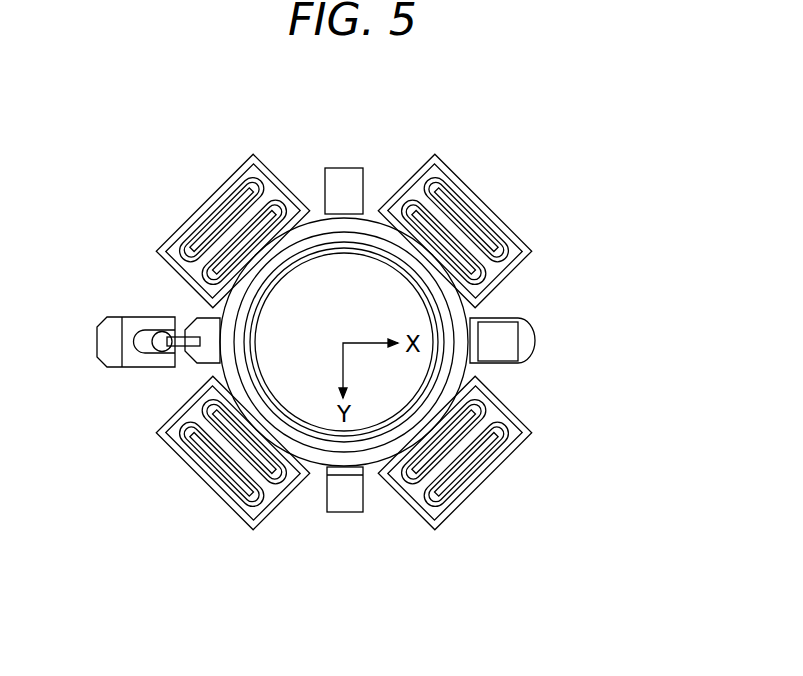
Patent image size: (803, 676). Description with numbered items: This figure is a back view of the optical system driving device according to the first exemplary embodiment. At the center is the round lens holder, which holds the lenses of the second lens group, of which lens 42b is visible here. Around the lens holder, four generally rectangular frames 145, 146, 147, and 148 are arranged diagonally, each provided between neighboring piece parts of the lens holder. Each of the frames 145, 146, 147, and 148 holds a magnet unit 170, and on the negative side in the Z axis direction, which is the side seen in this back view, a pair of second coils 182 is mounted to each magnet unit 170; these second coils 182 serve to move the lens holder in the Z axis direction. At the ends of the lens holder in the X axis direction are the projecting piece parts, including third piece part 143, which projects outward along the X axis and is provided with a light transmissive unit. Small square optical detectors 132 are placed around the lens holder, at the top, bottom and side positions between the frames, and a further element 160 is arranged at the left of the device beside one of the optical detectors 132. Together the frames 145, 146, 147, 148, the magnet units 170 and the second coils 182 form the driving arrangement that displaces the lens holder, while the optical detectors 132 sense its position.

The lens 42b is at (422, 318).
The optical detector 132 is at (347, 178).
The third piece part 143 is at (532, 342).
The frame 145 is at (528, 437).
The frame 146 is at (497, 217).
The frame 147 is at (253, 157).
The frame 148 is at (158, 430).
The position detector 160 is at (102, 317).
The magnet unit 170 is at (162, 252).
The second coil 182 is at (248, 230).